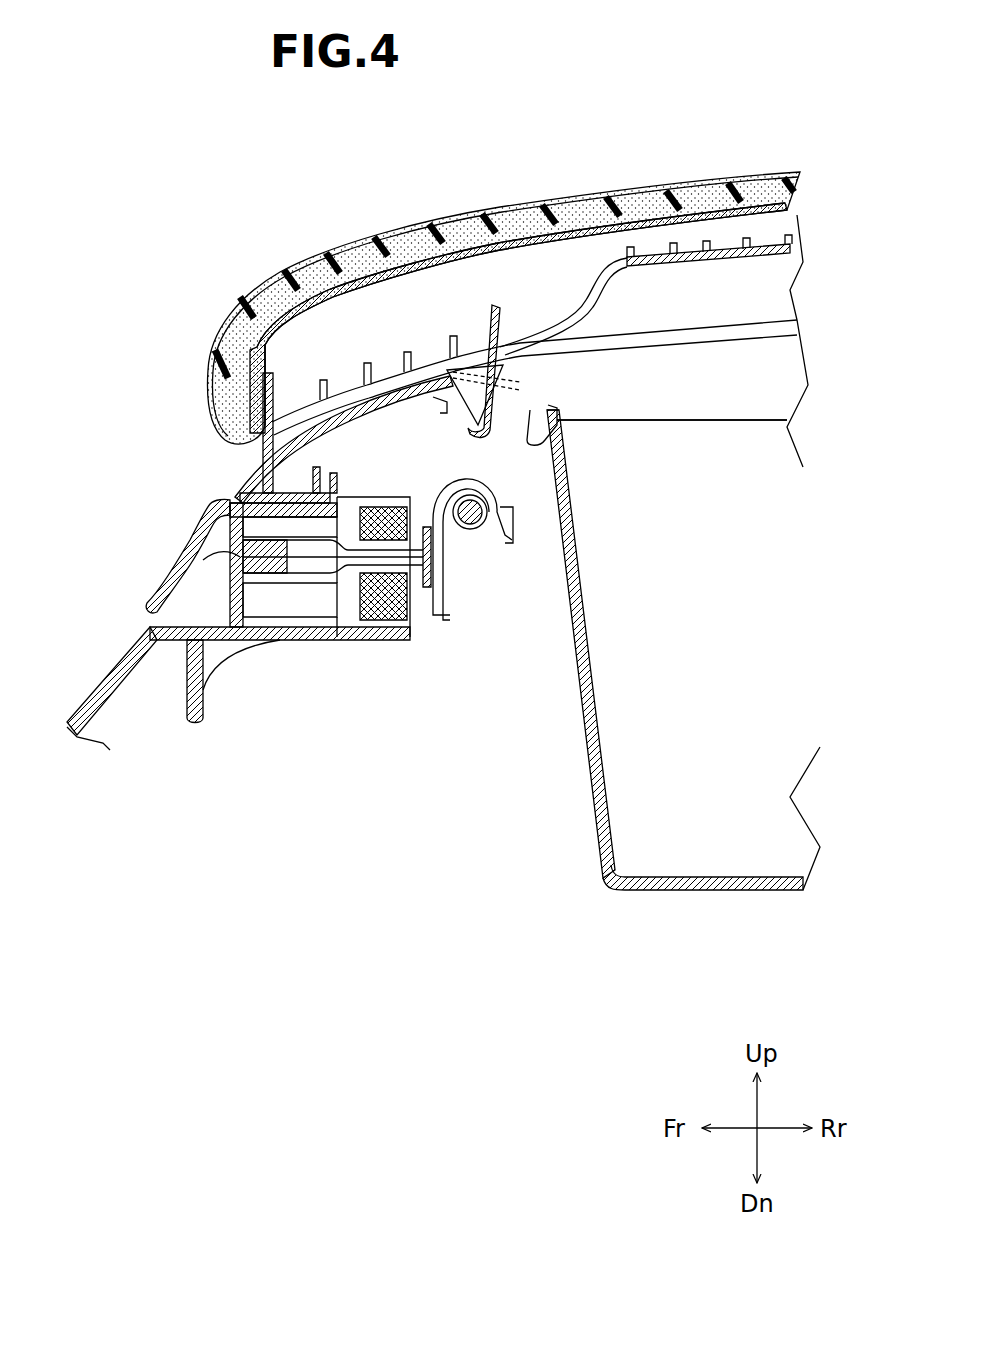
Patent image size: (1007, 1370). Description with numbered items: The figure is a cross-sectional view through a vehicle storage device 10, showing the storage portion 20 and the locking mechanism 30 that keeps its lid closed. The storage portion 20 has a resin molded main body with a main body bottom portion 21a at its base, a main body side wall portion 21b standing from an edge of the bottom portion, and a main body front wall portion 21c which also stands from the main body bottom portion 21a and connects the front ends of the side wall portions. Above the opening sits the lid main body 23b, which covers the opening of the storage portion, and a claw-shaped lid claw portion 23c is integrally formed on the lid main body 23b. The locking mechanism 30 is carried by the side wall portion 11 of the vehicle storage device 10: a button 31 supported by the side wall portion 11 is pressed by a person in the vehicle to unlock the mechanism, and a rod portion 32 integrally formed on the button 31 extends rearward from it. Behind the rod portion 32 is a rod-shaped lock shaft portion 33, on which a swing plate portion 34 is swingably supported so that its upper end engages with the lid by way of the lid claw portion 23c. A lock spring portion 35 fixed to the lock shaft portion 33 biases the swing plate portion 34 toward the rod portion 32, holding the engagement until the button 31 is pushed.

The vehicle storage device 10 is at (108, 79).
The side wall portion 11 is at (107, 672).
The storage portion 20 is at (727, 166).
The main body bottom portion 21a is at (714, 878).
The main body side wall portion 21b is at (715, 695).
The main body front wall portion 21c is at (578, 727).
The lid main body 23b is at (553, 196).
The lid claw portion 23c is at (425, 395).
The locking mechanism 30 is at (163, 553).
The button 31 is at (205, 512).
The rod portion 32 is at (310, 590).
The lock shaft portion 33 is at (472, 530).
The swing plate portion 34 is at (434, 605).
The lock spring portion 35 is at (473, 492).